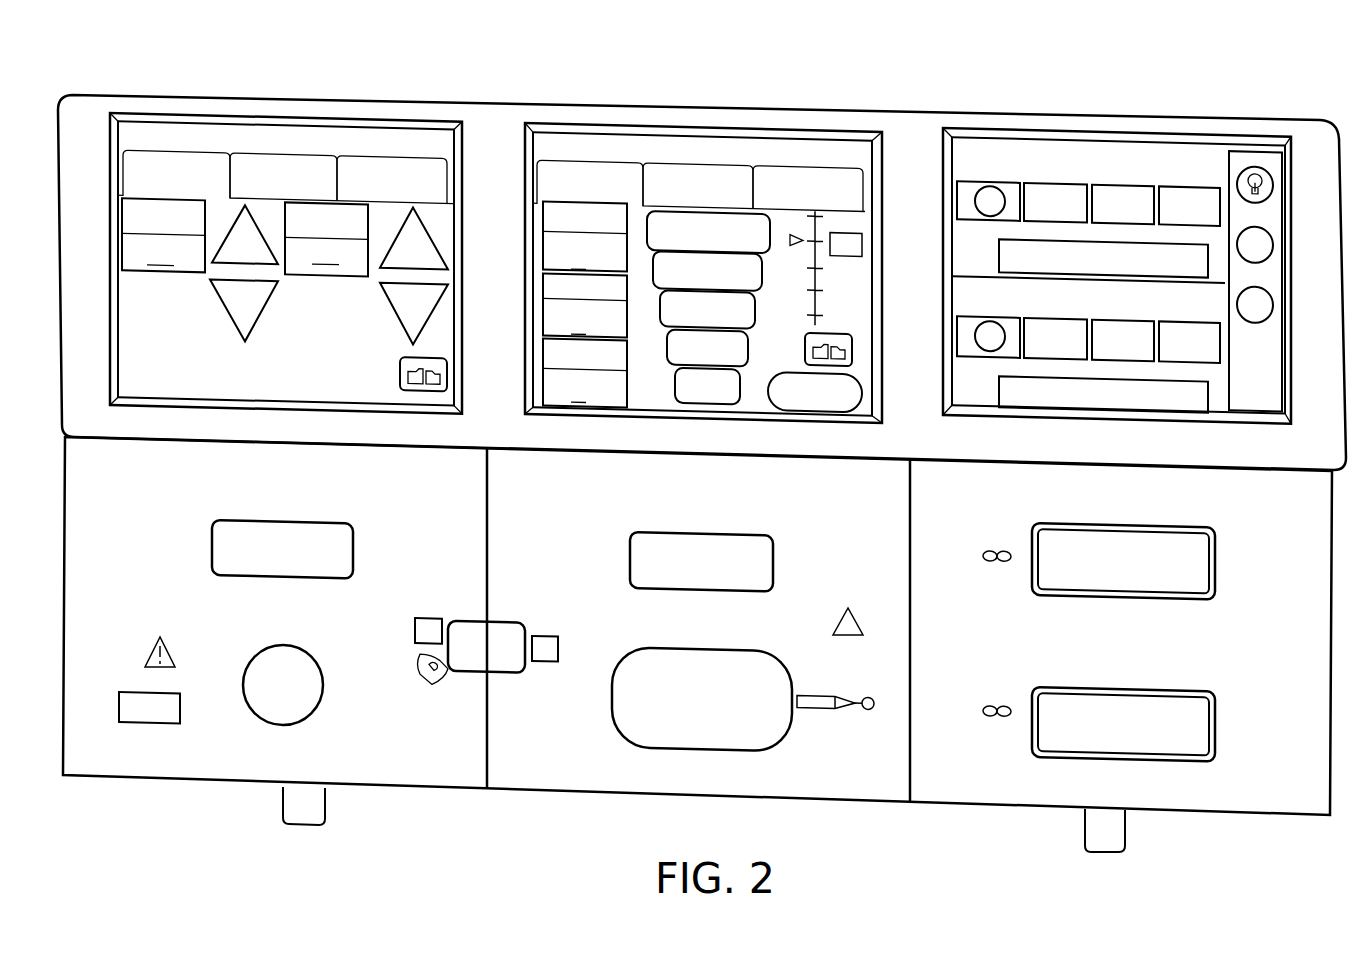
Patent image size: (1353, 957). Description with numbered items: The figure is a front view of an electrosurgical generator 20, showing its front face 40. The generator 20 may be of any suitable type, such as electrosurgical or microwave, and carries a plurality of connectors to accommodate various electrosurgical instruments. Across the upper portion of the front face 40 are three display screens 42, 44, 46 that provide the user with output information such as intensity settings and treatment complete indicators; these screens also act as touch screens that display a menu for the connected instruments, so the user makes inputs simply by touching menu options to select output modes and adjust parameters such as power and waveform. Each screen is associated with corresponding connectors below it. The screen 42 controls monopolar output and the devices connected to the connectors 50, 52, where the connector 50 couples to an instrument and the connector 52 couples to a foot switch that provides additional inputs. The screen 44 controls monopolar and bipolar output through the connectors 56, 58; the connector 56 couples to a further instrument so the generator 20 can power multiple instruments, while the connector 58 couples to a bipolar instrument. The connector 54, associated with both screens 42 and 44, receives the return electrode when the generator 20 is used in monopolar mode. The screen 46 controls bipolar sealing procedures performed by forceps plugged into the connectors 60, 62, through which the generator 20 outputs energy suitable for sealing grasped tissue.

The generator 20 is at (1186, 61).
The front face 40 is at (522, 104).
The display screen 42 is at (367, 113).
The display screen 44 is at (676, 125).
The display screen 46 is at (1045, 130).
The connector 50 is at (283, 521).
The connector 52 is at (313, 652).
The connector 54 is at (465, 620).
The connector 56 is at (700, 532).
The connector 58 is at (787, 671).
The connector 60 is at (1124, 523).
The connector 62 is at (1122, 687).